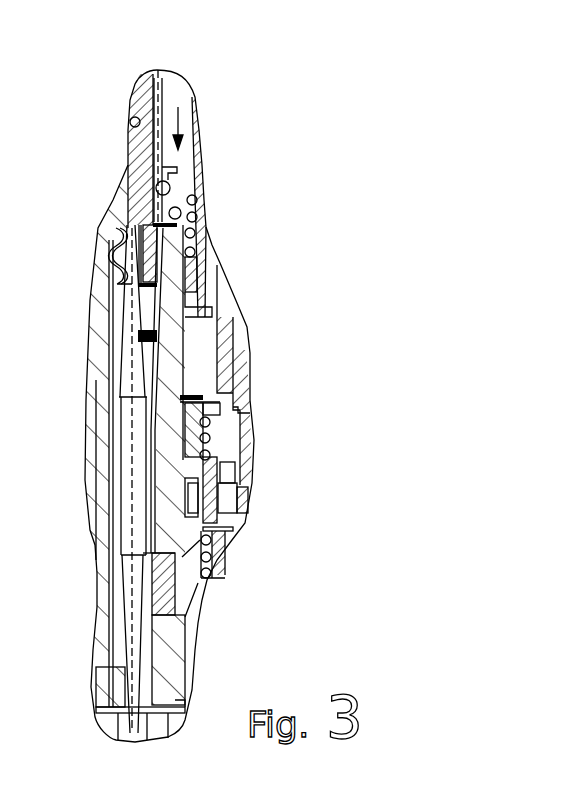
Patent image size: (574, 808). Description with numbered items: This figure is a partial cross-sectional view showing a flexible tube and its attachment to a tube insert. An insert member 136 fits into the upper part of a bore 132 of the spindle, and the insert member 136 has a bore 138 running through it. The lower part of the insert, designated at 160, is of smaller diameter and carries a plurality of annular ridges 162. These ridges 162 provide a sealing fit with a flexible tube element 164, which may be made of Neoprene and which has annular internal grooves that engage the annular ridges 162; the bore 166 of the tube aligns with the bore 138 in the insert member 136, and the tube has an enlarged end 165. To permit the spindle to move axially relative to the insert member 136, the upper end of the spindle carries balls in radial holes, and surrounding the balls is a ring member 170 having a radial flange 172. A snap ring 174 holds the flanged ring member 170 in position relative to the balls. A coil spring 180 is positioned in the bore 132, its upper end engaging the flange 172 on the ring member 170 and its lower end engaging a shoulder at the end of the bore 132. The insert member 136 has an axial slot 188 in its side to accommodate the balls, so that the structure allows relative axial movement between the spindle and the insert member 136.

The bore 132 is at (150, 396).
The insert member 136 is at (172, 73).
The bore 138 is at (183, 114).
The lower part of the insert 160 is at (115, 250).
The annular ridges 162 is at (100, 282).
The flexible tube element 164 is at (112, 363).
The enlarged end 165 is at (180, 690).
The bore 166 is at (197, 173).
The ring member 170 is at (197, 218).
The radial flange 172 is at (175, 181).
The snap ring 174 is at (200, 151).
The coil spring 180 is at (198, 249).
The axial slot 188 is at (185, 96).